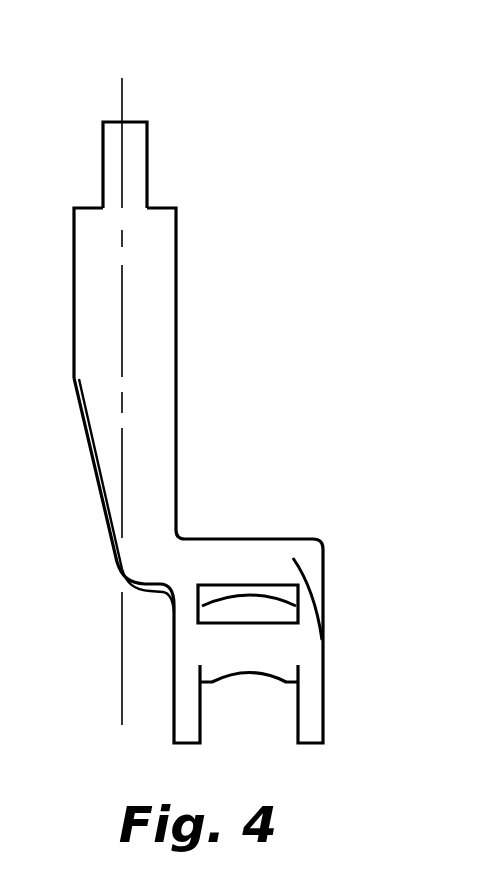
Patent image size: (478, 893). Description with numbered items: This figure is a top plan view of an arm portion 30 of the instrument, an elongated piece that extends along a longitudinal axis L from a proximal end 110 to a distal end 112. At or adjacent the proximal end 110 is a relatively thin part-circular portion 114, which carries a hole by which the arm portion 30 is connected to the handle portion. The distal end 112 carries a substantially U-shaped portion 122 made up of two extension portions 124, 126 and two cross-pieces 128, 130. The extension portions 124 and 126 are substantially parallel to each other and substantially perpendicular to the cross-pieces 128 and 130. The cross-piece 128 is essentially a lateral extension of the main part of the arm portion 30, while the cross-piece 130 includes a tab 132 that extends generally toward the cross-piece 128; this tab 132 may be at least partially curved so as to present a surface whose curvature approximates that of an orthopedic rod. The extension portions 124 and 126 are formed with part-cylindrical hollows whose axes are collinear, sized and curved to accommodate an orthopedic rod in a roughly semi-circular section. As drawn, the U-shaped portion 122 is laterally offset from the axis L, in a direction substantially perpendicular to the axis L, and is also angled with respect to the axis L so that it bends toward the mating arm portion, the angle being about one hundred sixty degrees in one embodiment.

The arm portion 30 is at (217, 417).
The proximal end 110 is at (192, 293).
The distal end 112 is at (148, 670).
The part-circular portion 114 is at (132, 121).
The U-shaped portion 122 is at (315, 539).
The extension portion 124 is at (313, 651).
The extension portion 126 is at (185, 652).
The cross-piece 128 is at (218, 555).
The cross-piece 130 is at (248, 653).
The tab 132 is at (252, 605).
The longitudinal axis L is at (121, 708).